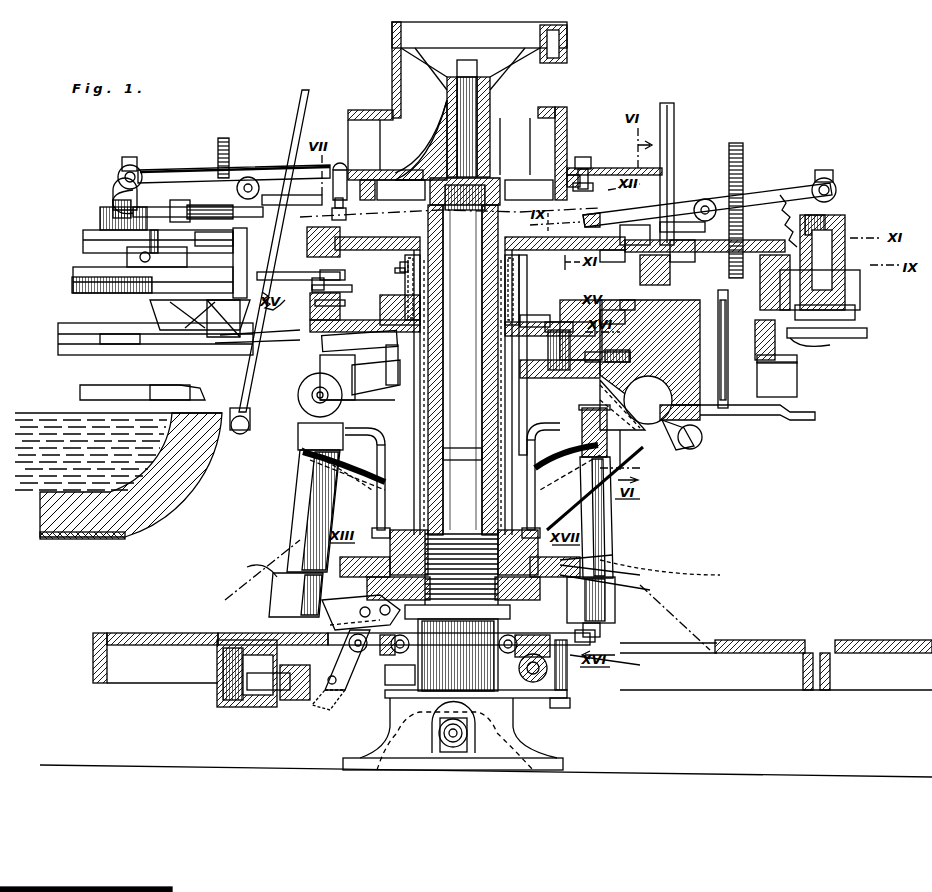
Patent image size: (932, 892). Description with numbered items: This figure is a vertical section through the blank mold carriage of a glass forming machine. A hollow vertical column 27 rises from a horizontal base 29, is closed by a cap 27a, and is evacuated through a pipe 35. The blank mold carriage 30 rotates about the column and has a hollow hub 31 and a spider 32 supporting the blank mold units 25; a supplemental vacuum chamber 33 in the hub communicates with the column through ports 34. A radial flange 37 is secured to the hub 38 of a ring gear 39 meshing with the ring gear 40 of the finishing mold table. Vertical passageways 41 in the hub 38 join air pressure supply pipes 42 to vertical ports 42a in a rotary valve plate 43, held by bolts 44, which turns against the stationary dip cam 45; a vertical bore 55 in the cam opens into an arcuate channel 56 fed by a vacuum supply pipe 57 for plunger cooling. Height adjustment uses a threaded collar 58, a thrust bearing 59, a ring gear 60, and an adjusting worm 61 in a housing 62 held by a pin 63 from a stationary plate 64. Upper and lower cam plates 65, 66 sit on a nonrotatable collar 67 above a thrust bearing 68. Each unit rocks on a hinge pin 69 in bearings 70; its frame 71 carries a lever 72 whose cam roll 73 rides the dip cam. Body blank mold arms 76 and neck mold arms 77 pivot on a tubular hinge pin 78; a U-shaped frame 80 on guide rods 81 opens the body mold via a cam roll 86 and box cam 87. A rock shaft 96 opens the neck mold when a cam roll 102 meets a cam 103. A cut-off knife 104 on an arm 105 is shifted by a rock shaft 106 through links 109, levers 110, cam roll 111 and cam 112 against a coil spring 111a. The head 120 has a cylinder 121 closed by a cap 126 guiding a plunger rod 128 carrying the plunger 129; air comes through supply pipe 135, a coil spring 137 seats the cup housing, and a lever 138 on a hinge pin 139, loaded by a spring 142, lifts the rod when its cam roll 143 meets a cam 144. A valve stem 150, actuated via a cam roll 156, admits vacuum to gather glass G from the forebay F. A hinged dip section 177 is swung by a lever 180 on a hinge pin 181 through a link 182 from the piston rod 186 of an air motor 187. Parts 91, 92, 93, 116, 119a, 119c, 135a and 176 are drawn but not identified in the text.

The blank mold units 25 is at (104, 190).
The hollow central vertical column 27 is at (478, 284).
The cap 27a is at (498, 182).
The horizontal base 29 is at (220, 768).
The blank mold carriage 30 is at (637, 450).
The hollow hub 31 is at (612, 478).
The spider 32 is at (310, 468).
The supplemental vacuum chamber 33 is at (378, 490).
The ports 34 is at (462, 452).
The pipe 35 is at (447, 743).
The radial flange 37 is at (538, 520).
The hub of ring gear 38 is at (378, 527).
The ring gear 39 is at (185, 634).
The ring gear 40 is at (905, 642).
The vertical passageways 41 is at (614, 556).
The air pressure supply pipes 42 is at (545, 478).
The vertical ports 42a is at (607, 571).
The rotary valve plate 43 is at (615, 580).
The bolts 44 is at (372, 552).
The dip cam 45 is at (600, 637).
The vertical bore 55 is at (591, 607).
The arcuate channel 56 is at (511, 514).
The vacuum supply pipe 57 is at (620, 656).
The collar 58 is at (437, 690).
The thrust bearing 59 is at (410, 647).
The ring gear 60 is at (473, 666).
The adjusting worm 61 is at (534, 683).
The housing 62 is at (540, 680).
The pin 63 is at (566, 700).
The stationary plate 64 is at (505, 700).
The upper cam plate 65 is at (397, 240).
The lower cam plate 66 is at (406, 322).
The nonrotatable collar 67 is at (406, 291).
The thrust bearing 68 is at (438, 378).
The horizontal hinge pin 69 is at (560, 402).
The bearings 70 is at (308, 432).
The rockable frame 71 is at (220, 310).
The lever 72 is at (310, 498).
The cam roll 73 is at (265, 590).
The body blank mold arms 76 is at (62, 341).
The neck mold arms 77 is at (875, 334).
The vertical tubular hinge pin 78 is at (775, 362).
The U-shaped frame 80 is at (423, 346).
The horizontal guide rods 81 is at (632, 358).
The cam roll 86 is at (436, 331).
The stationary box cam 87 is at (557, 332).
The cam 91 is at (376, 370).
The pin 92 is at (382, 358).
The block 93 is at (357, 372).
The vertical rock shaft 96 is at (767, 325).
The cam roll 102 is at (635, 227).
The cam 103 is at (612, 263).
The cut-off knife 104 is at (88, 387).
The arm 105 is at (140, 394).
The vertical rock shaft 106 is at (226, 140).
The depending links 109 is at (196, 205).
The levers 110 is at (664, 266).
The cam roll 111 is at (478, 297).
The coil spring 111a is at (626, 316).
The cam 112 is at (344, 304).
The roller 116 is at (246, 178).
The pin 119a is at (340, 278).
The pin 119c is at (391, 267).
The combined gathering blowing head and plunger head 120 is at (85, 248).
The vertical cylinder 121 is at (90, 260).
The cap 126 is at (98, 216).
The plunger rod 128 is at (131, 166).
The plunger 129 is at (830, 345).
The air pressure supply pipe 135 is at (108, 205).
The pin 135a is at (483, 205).
The coil spring 137 is at (450, 209).
The lever 138 is at (160, 173).
The horizontal hinge pin 139 is at (294, 172).
The spring 142 is at (125, 190).
The cam roll 143 is at (346, 180).
The stationary cam 144 is at (590, 175).
The valve stem 150 is at (224, 276).
The cam roll 156 is at (356, 209).
The cylinder foot 176 is at (296, 595).
The hinged dip section 177 is at (356, 612).
The lever 180 is at (340, 698).
The horizontal hinge pin 181 is at (342, 655).
The link 182 is at (342, 624).
The piston rod 186 is at (265, 692).
The air motor 187 is at (240, 706).
The supply body of glass G is at (85, 420).
The forebay F is at (215, 500).